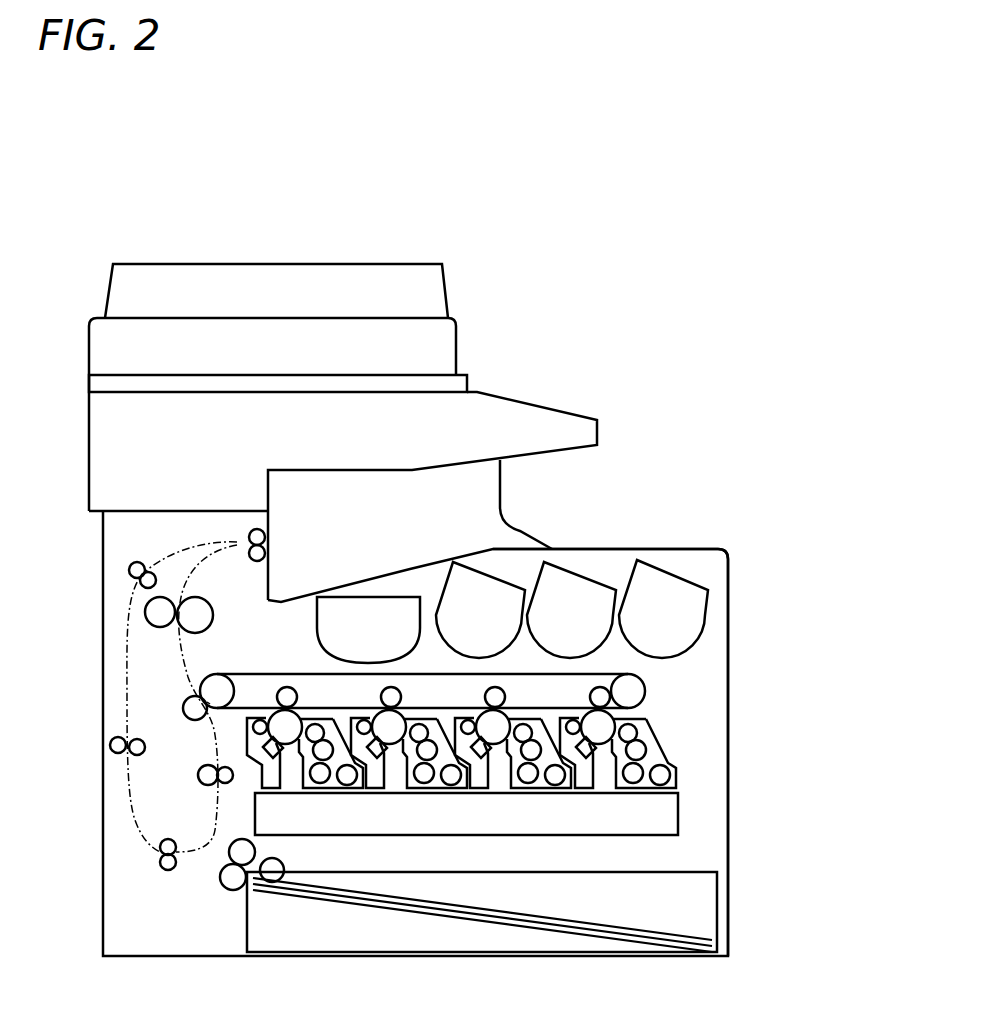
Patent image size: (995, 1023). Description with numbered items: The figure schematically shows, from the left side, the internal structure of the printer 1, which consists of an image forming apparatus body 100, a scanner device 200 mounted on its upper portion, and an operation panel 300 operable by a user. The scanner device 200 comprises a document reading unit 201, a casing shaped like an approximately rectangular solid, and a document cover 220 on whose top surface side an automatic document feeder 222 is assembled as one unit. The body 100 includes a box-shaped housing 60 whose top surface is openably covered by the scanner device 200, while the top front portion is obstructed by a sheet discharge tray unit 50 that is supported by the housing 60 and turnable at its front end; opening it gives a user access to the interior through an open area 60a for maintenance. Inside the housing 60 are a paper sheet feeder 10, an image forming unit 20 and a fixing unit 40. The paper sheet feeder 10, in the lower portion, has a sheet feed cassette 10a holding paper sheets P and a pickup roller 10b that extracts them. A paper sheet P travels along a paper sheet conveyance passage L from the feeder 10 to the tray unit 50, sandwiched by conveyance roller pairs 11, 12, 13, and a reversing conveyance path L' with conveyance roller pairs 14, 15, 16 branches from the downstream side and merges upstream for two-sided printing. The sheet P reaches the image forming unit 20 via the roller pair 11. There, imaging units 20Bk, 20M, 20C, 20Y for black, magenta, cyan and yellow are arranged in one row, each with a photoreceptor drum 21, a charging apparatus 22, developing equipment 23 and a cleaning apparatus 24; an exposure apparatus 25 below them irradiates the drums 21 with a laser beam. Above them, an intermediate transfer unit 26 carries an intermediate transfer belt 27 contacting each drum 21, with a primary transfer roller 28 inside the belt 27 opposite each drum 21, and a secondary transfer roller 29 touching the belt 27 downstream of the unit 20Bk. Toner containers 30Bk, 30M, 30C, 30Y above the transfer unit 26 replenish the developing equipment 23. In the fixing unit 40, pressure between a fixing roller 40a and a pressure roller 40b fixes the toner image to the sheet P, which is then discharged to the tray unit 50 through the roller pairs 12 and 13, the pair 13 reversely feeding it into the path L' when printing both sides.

The printer 1 is at (113, 228).
The scanner device 200 is at (309, 374).
The automatic document feeder 222 is at (456, 345).
The document reading unit 201 is at (89, 470).
The document cover 220 is at (470, 385).
The operation panel 300 is at (553, 410).
The image forming apparatus body 100 is at (651, 709).
The sheet discharge tray unit 50 is at (610, 511).
The open area 60a is at (602, 560).
The housing 60 is at (728, 625).
The paper sheet feeder 10 is at (530, 884).
The sheet feed cassette 10a is at (712, 915).
The pickup roller 10b is at (286, 868).
The paper sheet P is at (547, 921).
The conveyance roller pair 11 is at (230, 868).
The conveyance roller pair 12 is at (222, 783).
The conveyance roller pair 13 is at (250, 552).
The conveyance roller pair 14 is at (140, 582).
The conveyance roller pair 15 is at (132, 754).
The conveyance roller pair 16 is at (160, 864).
The fixing unit 40 is at (192, 622).
The fixing roller 40a is at (197, 633).
The pressure roller 40b is at (160, 627).
The secondary transfer roller 29 is at (195, 720).
The intermediate transfer unit 26 is at (422, 661).
The intermediate transfer belt 27 is at (297, 674).
The primary transfer roller 28 is at (297, 700).
The image forming unit 20 is at (485, 740).
The imaging unit 20Bk is at (305, 773).
The imaging unit 20M is at (409, 773).
The imaging unit 20C is at (513, 773).
The imaging unit 20Y is at (629, 740).
The photoreceptor drum 21 is at (635, 705).
The charging apparatus 22 is at (578, 777).
The developing equipment 23 is at (664, 749).
The cleaning apparatus 24 is at (557, 708).
The exposure apparatus 25 is at (555, 836).
The toner container 30Bk is at (368, 630).
The toner container 30M is at (480, 610).
The toner container 30C is at (571, 610).
The toner container 30Y is at (663, 609).
The paper sheet conveyance passage L is at (180, 705).
The reversing conveyance path L' is at (146, 697).